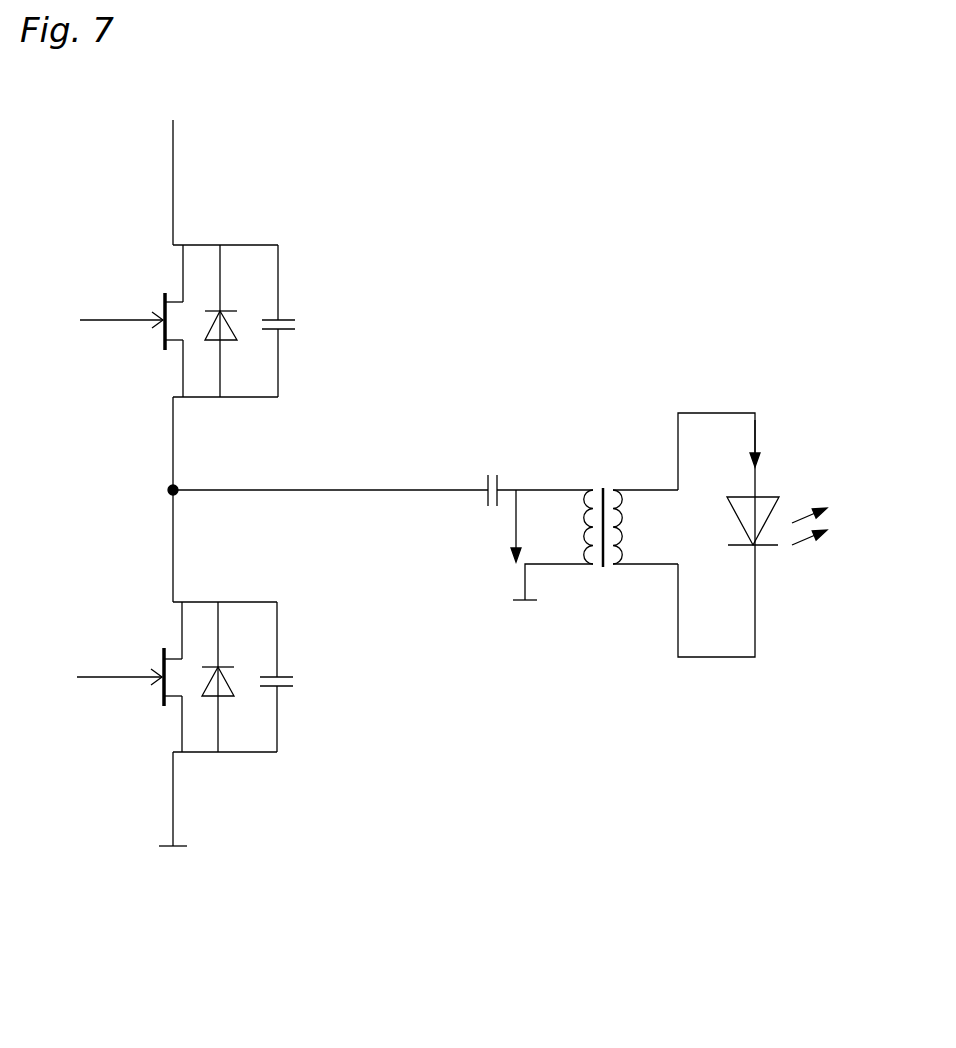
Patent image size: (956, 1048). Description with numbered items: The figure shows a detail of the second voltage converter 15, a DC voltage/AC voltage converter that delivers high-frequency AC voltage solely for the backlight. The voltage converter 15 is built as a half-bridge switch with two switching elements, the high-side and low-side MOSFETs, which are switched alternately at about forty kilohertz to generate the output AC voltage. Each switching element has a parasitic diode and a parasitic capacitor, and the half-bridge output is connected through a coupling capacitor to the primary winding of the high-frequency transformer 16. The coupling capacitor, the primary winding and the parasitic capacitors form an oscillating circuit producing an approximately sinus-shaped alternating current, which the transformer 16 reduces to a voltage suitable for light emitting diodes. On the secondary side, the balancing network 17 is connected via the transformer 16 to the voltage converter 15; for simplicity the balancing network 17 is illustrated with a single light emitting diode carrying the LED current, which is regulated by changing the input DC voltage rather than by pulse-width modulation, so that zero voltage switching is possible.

The second voltage converter 15 is at (409, 242).
The high-frequency transformer 16 is at (593, 490).
The balancing network 17 is at (706, 369).